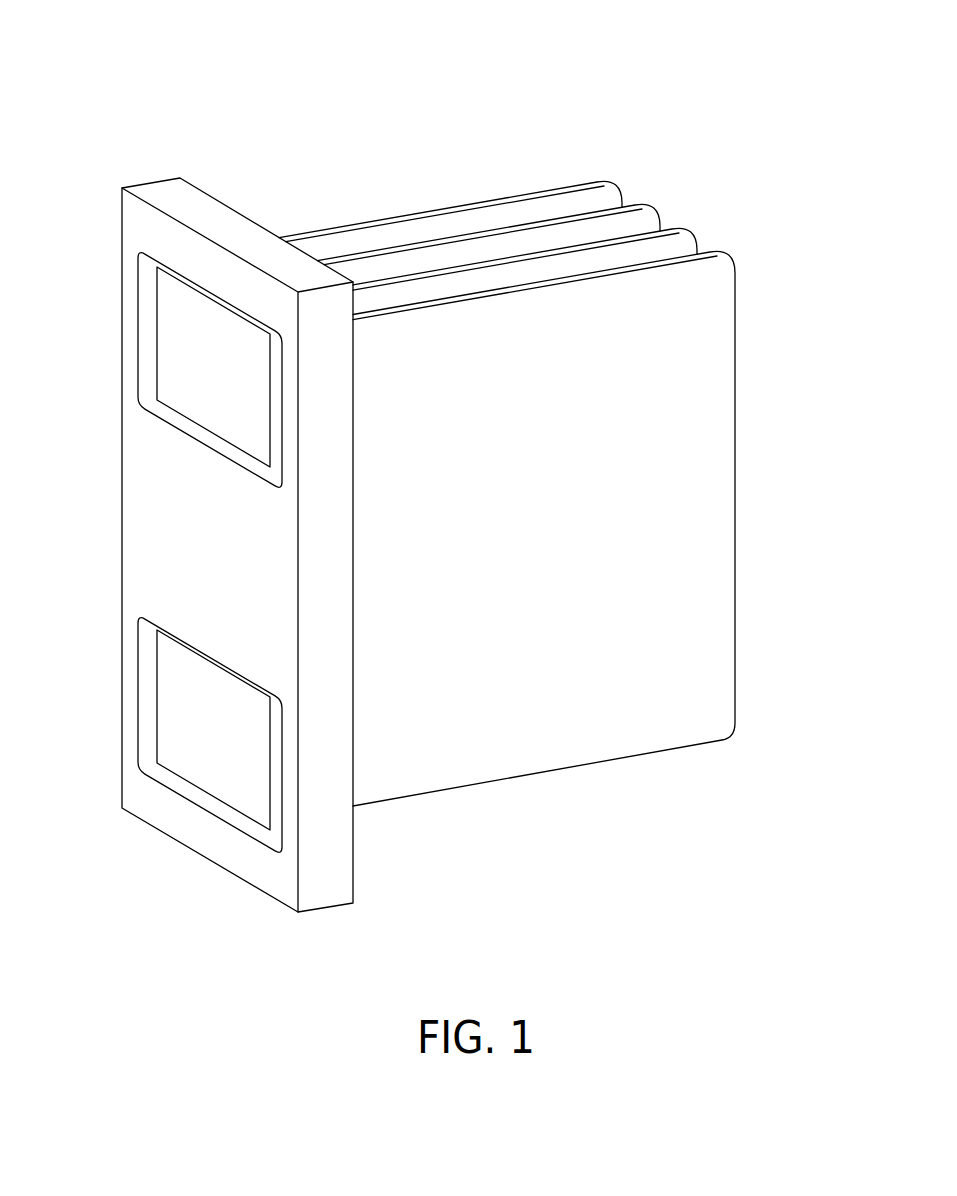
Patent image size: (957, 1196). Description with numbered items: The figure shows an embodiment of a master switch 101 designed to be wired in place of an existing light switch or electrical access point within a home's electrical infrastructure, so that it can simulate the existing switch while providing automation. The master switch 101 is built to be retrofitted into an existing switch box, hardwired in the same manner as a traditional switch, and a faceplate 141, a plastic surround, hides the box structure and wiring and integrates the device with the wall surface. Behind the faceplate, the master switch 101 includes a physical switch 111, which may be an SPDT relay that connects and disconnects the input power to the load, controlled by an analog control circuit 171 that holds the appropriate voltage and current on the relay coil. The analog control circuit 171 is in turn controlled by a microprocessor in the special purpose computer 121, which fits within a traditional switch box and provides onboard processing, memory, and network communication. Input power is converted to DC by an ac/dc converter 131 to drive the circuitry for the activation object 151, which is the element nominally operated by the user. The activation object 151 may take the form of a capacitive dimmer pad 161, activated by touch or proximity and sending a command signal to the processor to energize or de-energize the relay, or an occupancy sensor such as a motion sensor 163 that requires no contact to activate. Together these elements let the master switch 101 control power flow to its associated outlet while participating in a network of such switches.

The master switch 101 is at (563, 77).
The physical switch 111 is at (642, 207).
The special purpose computer 121 is at (683, 240).
The ac/dc converter 131 is at (725, 280).
The faceplate 141 is at (328, 887).
The activation object 151 is at (190, 389).
The capacitive dimmer pad 161 is at (178, 343).
The motion sensor 163 is at (178, 703).
The analog control circuit 171 is at (602, 183).